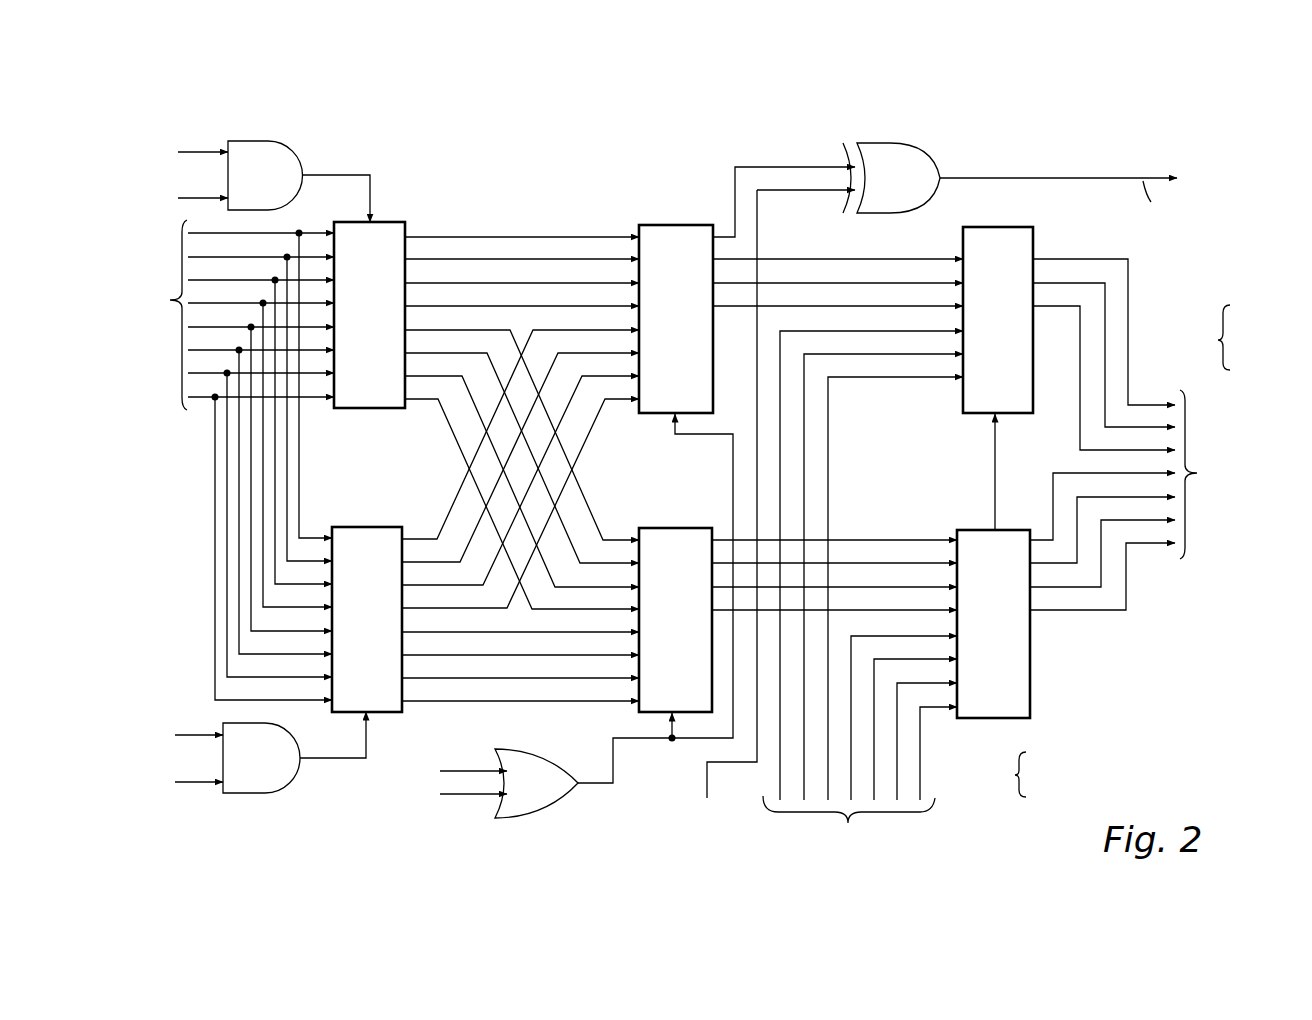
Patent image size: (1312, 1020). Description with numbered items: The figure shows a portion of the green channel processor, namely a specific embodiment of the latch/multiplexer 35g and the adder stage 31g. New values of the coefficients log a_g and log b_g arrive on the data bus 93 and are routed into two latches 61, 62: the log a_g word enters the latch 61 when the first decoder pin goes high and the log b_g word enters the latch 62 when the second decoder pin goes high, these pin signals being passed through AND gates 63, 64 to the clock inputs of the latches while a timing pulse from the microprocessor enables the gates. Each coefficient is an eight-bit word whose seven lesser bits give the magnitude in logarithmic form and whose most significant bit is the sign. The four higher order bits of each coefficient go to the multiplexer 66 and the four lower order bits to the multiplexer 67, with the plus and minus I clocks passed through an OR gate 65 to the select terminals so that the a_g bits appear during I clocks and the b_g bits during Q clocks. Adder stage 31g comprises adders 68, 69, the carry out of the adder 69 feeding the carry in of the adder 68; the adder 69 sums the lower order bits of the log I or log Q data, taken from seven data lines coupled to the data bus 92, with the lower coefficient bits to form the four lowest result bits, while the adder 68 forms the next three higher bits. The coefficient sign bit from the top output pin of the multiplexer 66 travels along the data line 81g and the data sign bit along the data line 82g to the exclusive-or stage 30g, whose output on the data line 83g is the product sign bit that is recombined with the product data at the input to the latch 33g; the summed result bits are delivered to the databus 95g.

The exclusive-or stage 30g is at (925, 158).
The adder stage 31g is at (988, 485).
The latch 33g is at (1236, 184).
The latch/multiplexer 35g is at (392, 489).
The latch 61 is at (393, 222).
The latch 62 is at (392, 713).
The AND gate 63 is at (299, 156).
The AND gate 64 is at (272, 793).
The OR gate 65 is at (553, 808).
The multiplexer 66 is at (639, 228).
The multiplexer 67 is at (637, 714).
The adder 68 is at (1012, 414).
The adder 69 is at (1030, 677).
The data line 81g is at (735, 177).
The data line 82g is at (707, 779).
The data line 83g is at (1090, 180).
The data bus 92 is at (906, 800).
The data bus 93 is at (209, 460).
The databus 95g is at (1211, 432).